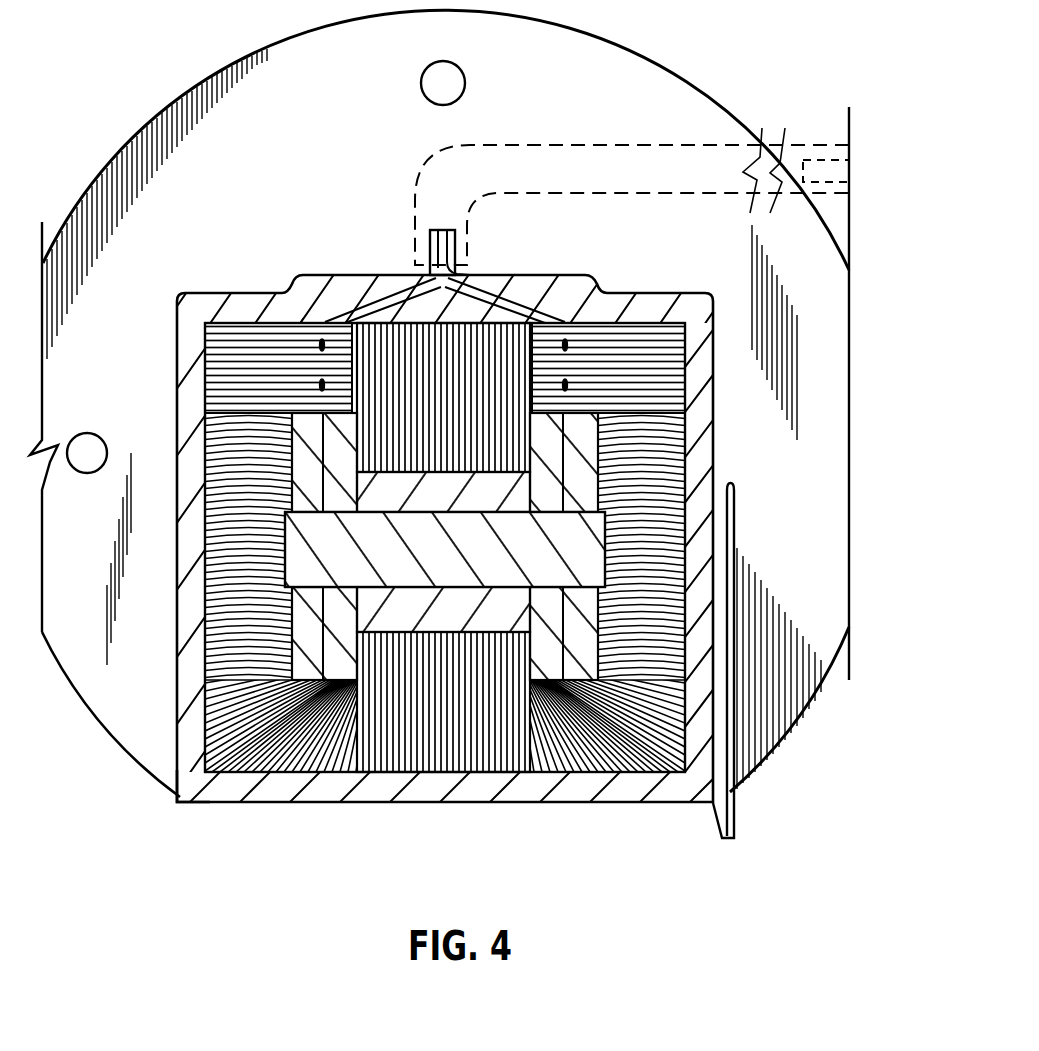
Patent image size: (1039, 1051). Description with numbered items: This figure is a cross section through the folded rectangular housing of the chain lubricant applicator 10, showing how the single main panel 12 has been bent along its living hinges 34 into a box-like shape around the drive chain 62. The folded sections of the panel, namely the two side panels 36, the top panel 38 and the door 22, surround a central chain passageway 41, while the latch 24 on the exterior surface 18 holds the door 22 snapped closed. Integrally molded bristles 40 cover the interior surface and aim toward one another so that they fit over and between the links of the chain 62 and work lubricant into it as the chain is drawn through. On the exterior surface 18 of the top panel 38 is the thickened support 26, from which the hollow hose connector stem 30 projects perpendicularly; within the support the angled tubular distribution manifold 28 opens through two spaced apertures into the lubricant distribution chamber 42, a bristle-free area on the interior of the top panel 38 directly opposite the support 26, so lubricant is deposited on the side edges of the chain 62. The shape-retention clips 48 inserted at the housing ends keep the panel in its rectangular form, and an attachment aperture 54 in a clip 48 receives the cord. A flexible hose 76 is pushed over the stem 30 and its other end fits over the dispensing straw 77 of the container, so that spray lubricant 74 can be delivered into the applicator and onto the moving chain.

The chain lubricant applicator 10 is at (108, 90).
The main panel 12 is at (177, 748).
The exterior surface 18 is at (665, 293).
The door 22 is at (462, 805).
The latch 24 is at (735, 840).
The support 26 is at (378, 275).
The distribution manifold 28 is at (468, 276).
The hose connector stem 30 is at (440, 232).
The living hinges 34 is at (180, 803).
The side panels 36 is at (714, 428).
The top panel 38 is at (245, 292).
The bristles 40 is at (627, 777).
The chain passageway 41 is at (633, 595).
The lubricant distribution chamber 42 is at (427, 378).
The shape-retention clips 48 is at (213, 70).
The attachment aperture 54 is at (445, 75).
The drive chain 62 is at (415, 632).
The spray lubricant 74 is at (312, 382).
The hose 76 is at (710, 143).
The dispensing straw 77 is at (825, 167).